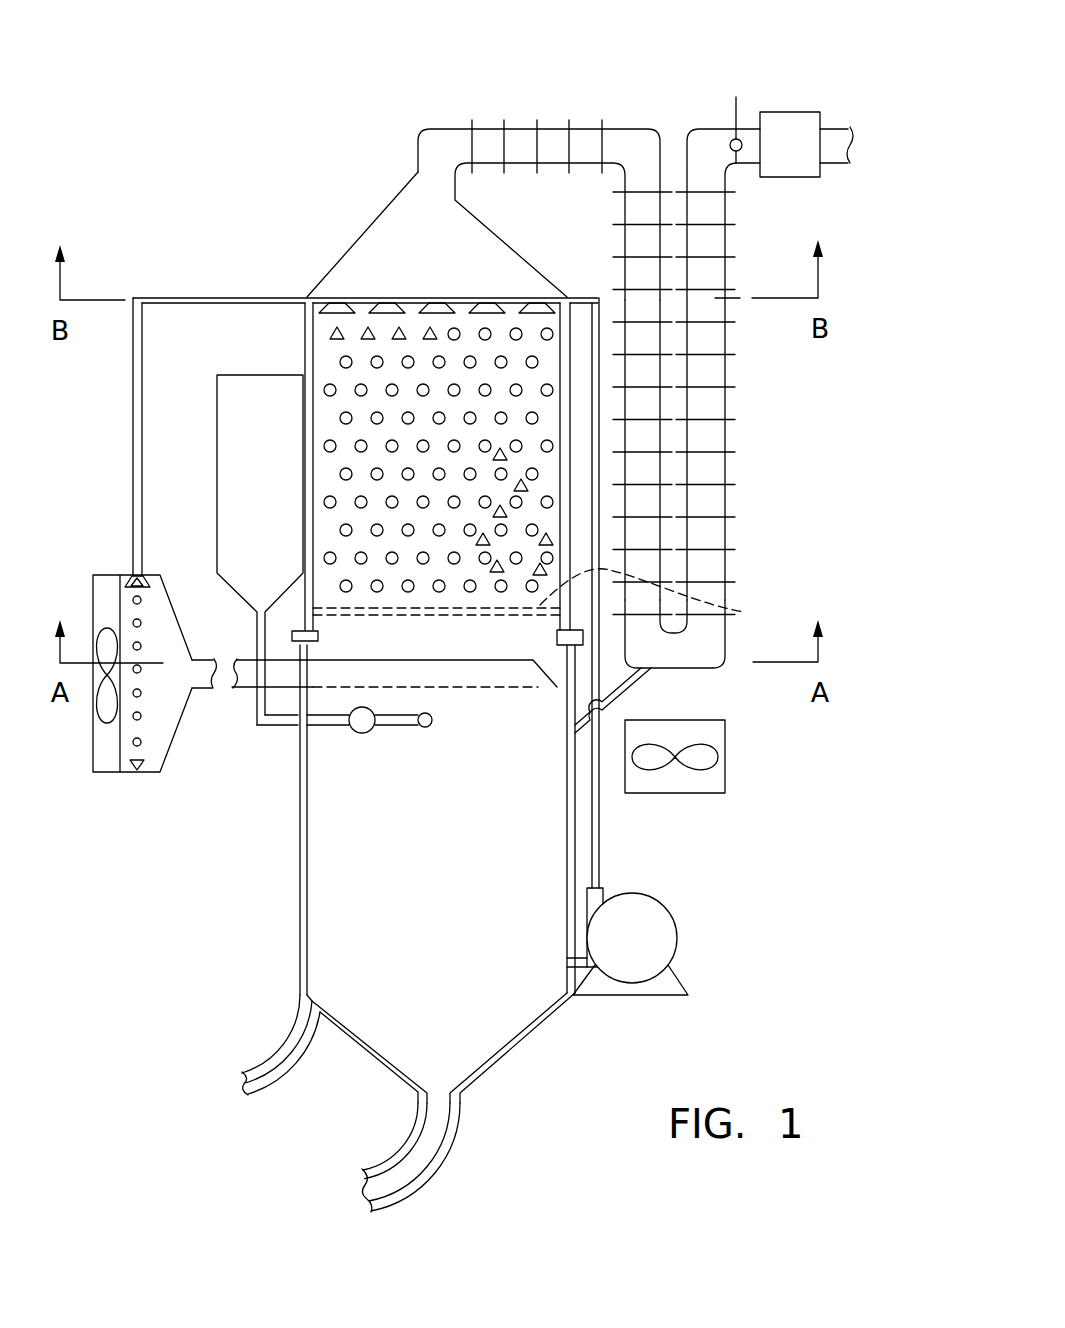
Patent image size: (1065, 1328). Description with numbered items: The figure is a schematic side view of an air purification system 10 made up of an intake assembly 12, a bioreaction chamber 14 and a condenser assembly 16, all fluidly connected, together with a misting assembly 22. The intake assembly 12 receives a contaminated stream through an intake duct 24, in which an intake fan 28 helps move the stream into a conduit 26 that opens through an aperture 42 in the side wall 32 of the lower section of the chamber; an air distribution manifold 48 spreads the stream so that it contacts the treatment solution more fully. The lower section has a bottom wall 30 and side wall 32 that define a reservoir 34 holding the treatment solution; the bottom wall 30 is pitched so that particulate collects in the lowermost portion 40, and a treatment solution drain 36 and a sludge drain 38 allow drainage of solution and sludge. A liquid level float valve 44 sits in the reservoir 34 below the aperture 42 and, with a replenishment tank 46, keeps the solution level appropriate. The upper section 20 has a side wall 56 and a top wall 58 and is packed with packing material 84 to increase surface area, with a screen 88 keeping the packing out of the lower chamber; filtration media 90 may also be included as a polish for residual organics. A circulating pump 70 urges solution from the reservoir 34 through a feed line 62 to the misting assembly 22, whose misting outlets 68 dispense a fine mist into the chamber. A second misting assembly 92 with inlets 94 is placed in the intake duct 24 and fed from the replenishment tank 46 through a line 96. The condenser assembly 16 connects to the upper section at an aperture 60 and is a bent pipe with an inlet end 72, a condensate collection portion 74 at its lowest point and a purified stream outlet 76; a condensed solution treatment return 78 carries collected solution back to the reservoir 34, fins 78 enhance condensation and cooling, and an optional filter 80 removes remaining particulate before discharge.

The system 10 is at (228, 160).
The intake assembly 12 is at (735, 118).
The bioreaction chamber 14 is at (280, 272).
The condenser assembly 16 is at (628, 98).
The upper section 20 is at (287, 317).
The misting assembly 22 is at (593, 286).
The intake duct 24 is at (100, 708).
The conduit 26 is at (208, 657).
The intake fan 28 is at (110, 745).
The bottom wall 30 is at (537, 1025).
The side wall 32 is at (298, 897).
The reservoir 34 is at (430, 955).
The treatment solution drain 36 is at (270, 1057).
The sludge drain 38 is at (447, 1143).
The lowermost portion 40 is at (420, 1068).
The aperture 42 is at (308, 672).
The liquid level float valve 44 is at (335, 740).
The replenishment tank 46 is at (198, 475).
The air distribution manifold 48 is at (383, 651).
The side wall 56 is at (303, 338).
The top wall 58 is at (390, 215).
The aperture 60 is at (458, 192).
The feed line 62 is at (600, 815).
The misting outlets 68 is at (388, 305).
The circulating pump 70 is at (618, 953).
The inlet end 72 is at (417, 170).
The condensate collection portion 74 is at (695, 672).
The purified stream outlet 76 is at (828, 128).
The condensed solution treatment return 78 is at (537, 127).
The filter 80 is at (776, 160).
The packing material 84 is at (547, 330).
The screen 88 is at (663, 598).
The filtration media 90 is at (502, 455).
The misting assembly 92 is at (130, 580).
The inlets 94 is at (148, 580).
The line 96 is at (133, 345).